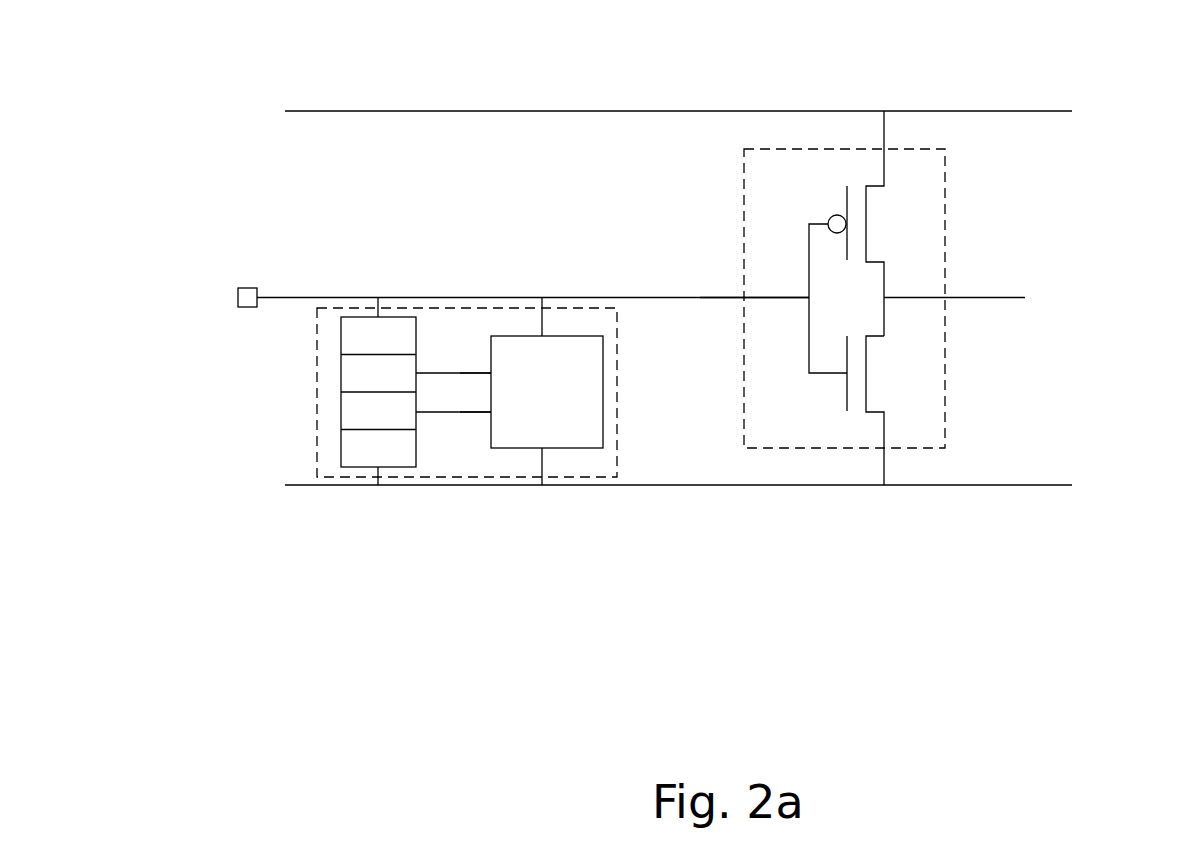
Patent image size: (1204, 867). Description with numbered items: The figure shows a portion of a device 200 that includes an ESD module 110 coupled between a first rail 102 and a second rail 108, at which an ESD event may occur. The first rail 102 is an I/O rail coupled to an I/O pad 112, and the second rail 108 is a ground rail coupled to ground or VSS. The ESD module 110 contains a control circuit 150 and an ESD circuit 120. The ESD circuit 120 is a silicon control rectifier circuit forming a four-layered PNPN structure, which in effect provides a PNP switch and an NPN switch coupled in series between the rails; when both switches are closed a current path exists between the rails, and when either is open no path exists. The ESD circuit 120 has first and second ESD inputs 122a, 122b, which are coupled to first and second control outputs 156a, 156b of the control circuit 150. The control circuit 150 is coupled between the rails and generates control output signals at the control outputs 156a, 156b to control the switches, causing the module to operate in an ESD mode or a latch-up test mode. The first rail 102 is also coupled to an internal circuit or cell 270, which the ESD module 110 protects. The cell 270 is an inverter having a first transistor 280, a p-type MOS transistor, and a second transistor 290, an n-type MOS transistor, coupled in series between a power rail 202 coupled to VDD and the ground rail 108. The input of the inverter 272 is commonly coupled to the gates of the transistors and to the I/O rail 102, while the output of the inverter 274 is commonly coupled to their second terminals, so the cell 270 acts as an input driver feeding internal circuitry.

The device 200 is at (705, 658).
The power rail 202 is at (942, 111).
The second rail 108 is at (968, 485).
The I/O pad 112 is at (219, 295).
The first rail 102 is at (303, 297).
The ESD module 110 is at (303, 464).
The ESD circuit 120 is at (341, 368).
The first ESD input 122a is at (424, 373).
The second ESD input 122b is at (418, 413).
The control circuit 150 is at (568, 336).
The first control output 156a is at (483, 373).
The second control output 156b is at (482, 420).
The internal circuit or cell 270 is at (945, 197).
The input of the inverter 272 is at (725, 297).
The output of the inverter 274 is at (970, 297).
The first transistor 280 is at (800, 212).
The second transistor 290 is at (791, 373).